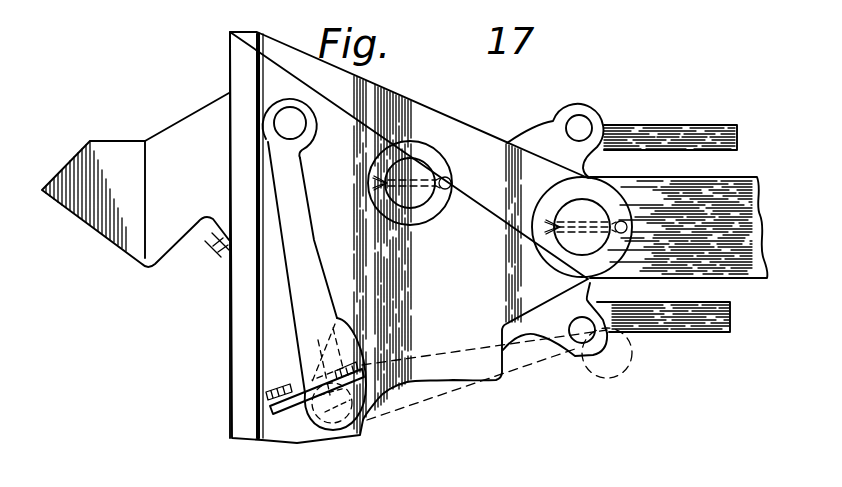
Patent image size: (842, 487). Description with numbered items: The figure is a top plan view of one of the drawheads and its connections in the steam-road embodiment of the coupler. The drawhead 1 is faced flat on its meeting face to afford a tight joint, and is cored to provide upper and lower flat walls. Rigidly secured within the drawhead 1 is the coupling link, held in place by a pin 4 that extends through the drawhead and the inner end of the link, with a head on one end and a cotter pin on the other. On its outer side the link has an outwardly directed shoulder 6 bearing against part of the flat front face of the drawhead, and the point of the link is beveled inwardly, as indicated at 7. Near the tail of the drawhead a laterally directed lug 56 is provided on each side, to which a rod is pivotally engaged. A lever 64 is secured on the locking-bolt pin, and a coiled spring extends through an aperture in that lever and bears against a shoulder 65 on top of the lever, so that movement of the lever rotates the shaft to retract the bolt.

The drawhead 1 is at (284, 64).
The outwardly directed shoulder 6 is at (219, 108).
The beveled point 7 is at (78, 157).
The pin 4 is at (415, 170).
The laterally directed lug 56 is at (597, 126).
The lever 64 is at (347, 337).
The shoulder 65 is at (367, 368).